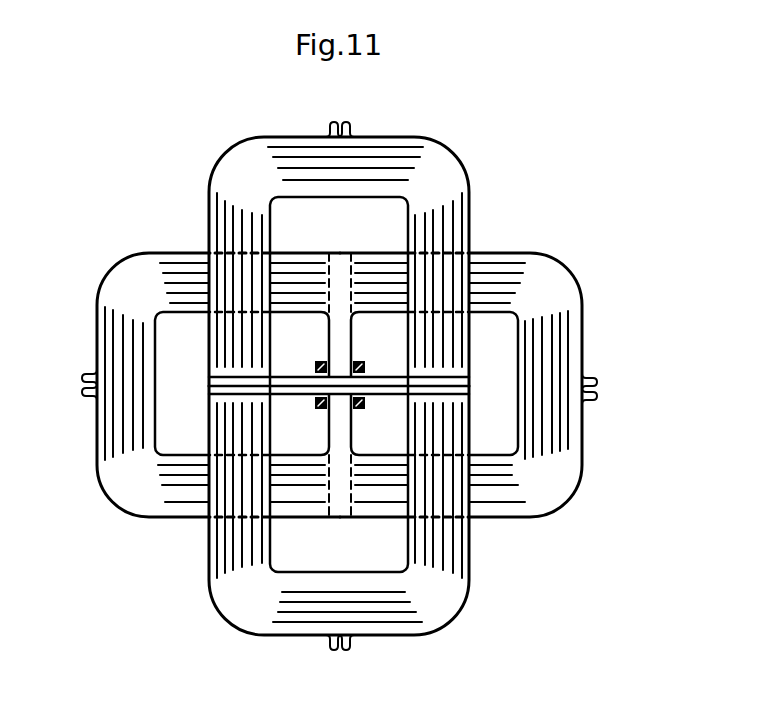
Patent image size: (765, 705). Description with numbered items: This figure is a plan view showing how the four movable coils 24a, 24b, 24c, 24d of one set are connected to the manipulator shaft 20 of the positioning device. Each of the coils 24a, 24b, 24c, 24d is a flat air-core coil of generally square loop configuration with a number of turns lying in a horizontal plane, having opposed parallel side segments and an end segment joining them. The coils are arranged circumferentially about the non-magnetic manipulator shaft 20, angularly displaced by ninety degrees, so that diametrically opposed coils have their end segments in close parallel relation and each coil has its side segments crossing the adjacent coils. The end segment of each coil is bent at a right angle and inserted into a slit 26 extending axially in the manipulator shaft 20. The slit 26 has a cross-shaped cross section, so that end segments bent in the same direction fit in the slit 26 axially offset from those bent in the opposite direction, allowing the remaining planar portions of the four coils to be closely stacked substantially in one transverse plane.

The movable coil 24a is at (125, 493).
The movable coil 24b is at (232, 612).
The movable coil 24c is at (567, 318).
The movable coil 24d is at (278, 143).
The manipulator shaft 20 is at (366, 371).
The slit 26 is at (361, 362).